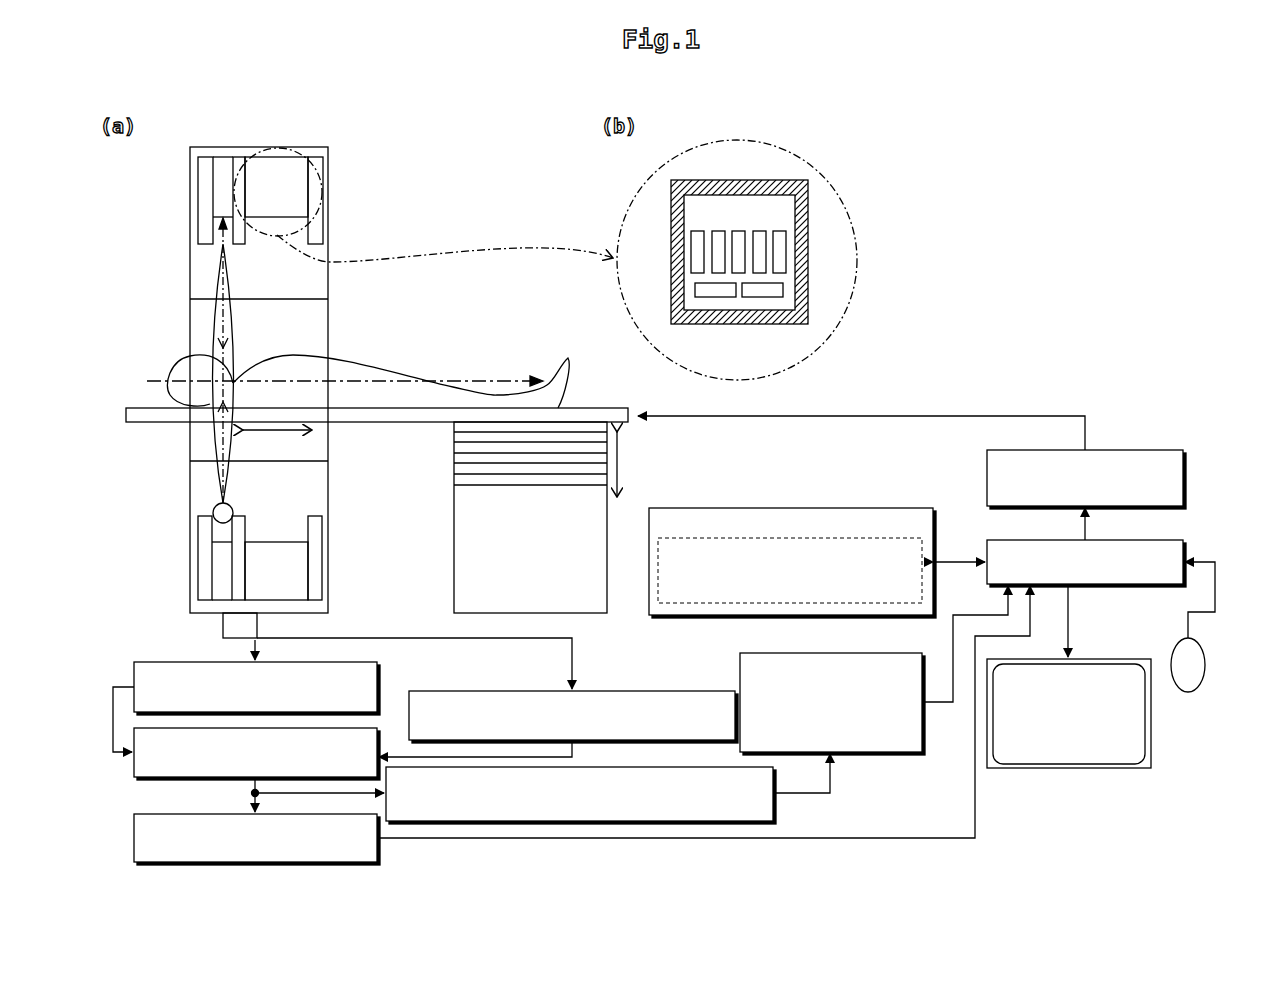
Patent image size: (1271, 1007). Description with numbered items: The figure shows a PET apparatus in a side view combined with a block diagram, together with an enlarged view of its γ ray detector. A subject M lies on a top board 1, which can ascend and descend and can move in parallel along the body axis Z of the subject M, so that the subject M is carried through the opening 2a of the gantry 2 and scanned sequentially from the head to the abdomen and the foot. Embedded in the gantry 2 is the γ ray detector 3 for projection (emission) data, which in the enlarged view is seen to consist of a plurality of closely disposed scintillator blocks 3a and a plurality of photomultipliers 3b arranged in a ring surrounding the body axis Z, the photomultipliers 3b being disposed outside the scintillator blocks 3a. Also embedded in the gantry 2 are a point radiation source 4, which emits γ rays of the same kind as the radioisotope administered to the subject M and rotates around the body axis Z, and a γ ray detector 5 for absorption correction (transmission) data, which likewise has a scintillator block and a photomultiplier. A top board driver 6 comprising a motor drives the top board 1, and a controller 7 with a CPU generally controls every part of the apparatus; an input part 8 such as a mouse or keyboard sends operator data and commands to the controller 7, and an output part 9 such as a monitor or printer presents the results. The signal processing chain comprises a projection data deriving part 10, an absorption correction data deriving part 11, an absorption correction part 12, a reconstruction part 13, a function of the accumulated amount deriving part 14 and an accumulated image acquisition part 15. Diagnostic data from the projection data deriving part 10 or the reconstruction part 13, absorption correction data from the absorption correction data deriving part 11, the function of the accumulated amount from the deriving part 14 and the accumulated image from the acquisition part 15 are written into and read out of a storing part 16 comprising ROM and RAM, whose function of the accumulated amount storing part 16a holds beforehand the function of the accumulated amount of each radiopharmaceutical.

The top board 1 is at (615, 406).
The gantry 2 is at (188, 262).
The opening 2a is at (207, 447).
The γ ray detector 3 is at (285, 162).
The scintillator block 3a is at (698, 290).
The photomultiplier 3b is at (701, 225).
The point radiation source 4 is at (212, 507).
The γ ray detector for absorption correction data 5 is at (225, 165).
The top board driver 6 is at (1115, 450).
The controller 7 is at (1110, 585).
The input part 8 is at (1195, 683).
The output part 9 is at (1055, 770).
The projection data deriving part 10 is at (352, 713).
The absorption correction data deriving part 11 is at (462, 690).
The absorption correction part 12 is at (155, 779).
The reconstruction part 13 is at (134, 838).
The function of the accumulated amount deriving part 14 is at (618, 764).
The accumulated image acquisition part 15 is at (772, 653).
The storing part 16 is at (753, 507).
The function of the accumulated amount storing part 16a is at (823, 514).
The subject M is at (498, 397).
The body axis Z is at (497, 378).